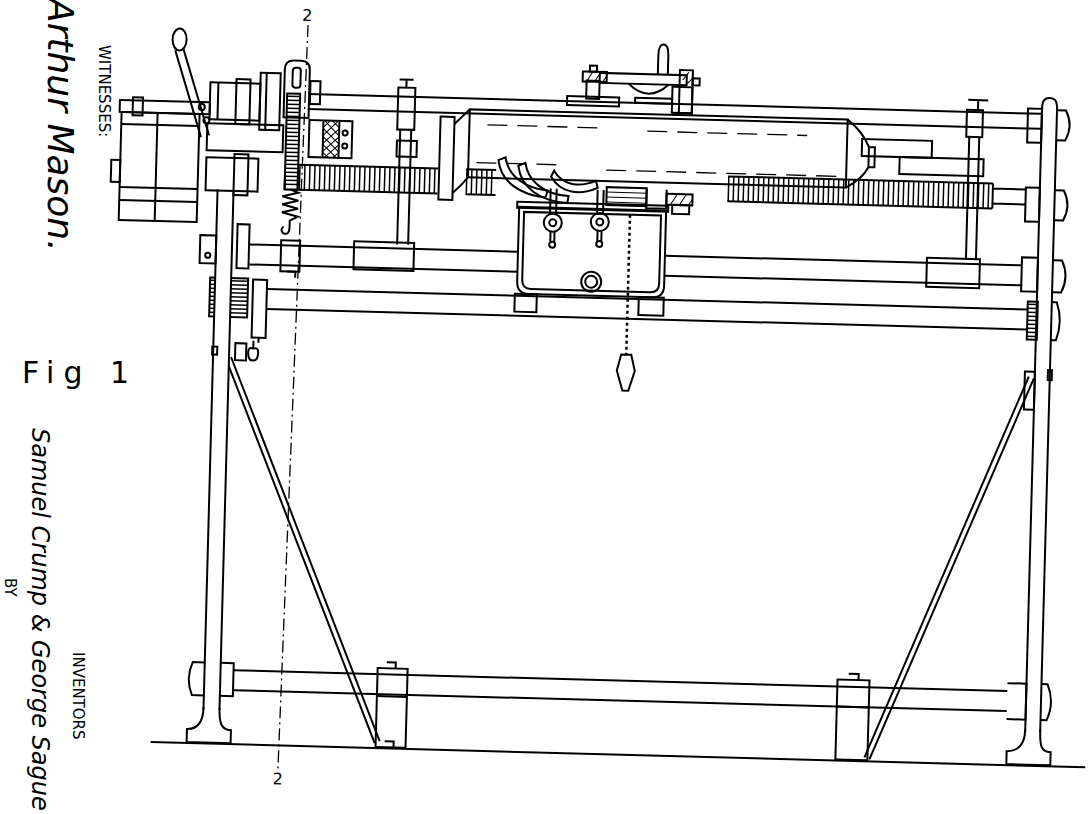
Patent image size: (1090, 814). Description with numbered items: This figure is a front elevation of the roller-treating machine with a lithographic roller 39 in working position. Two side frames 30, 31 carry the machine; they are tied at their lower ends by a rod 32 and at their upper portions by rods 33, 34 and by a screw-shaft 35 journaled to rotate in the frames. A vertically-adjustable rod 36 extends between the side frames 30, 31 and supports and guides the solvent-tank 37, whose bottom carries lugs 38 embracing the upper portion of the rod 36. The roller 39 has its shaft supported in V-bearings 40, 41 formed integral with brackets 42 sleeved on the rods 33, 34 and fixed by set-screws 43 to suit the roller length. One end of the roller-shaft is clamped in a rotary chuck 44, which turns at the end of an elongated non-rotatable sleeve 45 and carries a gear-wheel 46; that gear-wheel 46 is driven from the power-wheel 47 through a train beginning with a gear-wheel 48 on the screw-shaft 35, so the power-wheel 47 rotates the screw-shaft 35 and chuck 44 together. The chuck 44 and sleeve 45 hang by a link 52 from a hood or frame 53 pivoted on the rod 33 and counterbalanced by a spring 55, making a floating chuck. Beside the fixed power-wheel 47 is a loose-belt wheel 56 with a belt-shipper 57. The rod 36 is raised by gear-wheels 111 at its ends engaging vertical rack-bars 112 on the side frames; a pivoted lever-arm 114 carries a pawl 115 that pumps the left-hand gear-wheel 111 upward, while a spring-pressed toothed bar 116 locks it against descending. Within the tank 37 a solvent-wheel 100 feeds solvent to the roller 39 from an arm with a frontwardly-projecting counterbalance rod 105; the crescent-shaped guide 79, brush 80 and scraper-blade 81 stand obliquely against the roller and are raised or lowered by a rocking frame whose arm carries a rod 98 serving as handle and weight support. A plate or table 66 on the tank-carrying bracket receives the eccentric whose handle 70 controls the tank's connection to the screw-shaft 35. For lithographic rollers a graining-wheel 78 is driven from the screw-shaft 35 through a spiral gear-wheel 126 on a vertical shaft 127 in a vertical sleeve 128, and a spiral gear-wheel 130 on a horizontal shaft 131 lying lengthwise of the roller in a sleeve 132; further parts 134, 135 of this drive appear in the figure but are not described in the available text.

The side frame 30 is at (220, 468).
The side frame 31 is at (1040, 523).
The rod 32 is at (619, 681).
The rod 33 is at (907, 108).
The rod 34 is at (329, 266).
The screw-shaft 35 is at (370, 197).
The vertically-adjustable rod 36 is at (808, 313).
The solvent-tank 37 is at (566, 286).
The lugs 38 is at (520, 311).
The roller 39 is at (656, 160).
The V-bearing 40 is at (921, 158).
The V-bearing 41 is at (400, 149).
The brackets 42 is at (405, 218).
The set-screws 43 is at (400, 88).
The rotary chuck 44 is at (325, 128).
The non-rotatable sleeve 45 is at (220, 147).
The gear-wheel 46 is at (276, 189).
The power-wheel 47 is at (185, 233).
The gear-wheel 48 is at (296, 200).
The link 52 is at (258, 82).
The hood or frame 53 is at (278, 72).
The spring 55 is at (295, 235).
The loose-belt wheel 56 is at (116, 203).
The belt-shipper 57 is at (201, 111).
The plate or table 66 is at (631, 93).
The handle 70 is at (658, 57).
The graining-wheel 78 is at (561, 99).
The guide 79 is at (570, 193).
The brush 80 is at (520, 193).
The scraper-blade 81 is at (493, 188).
The rod 98 is at (547, 249).
The solvent-wheel 100 is at (614, 192).
The rod 105 is at (614, 255).
The gear-wheels 111 is at (220, 334).
The rack-bars 112 is at (220, 334).
The lever-arm 114 is at (255, 336).
The pawl 115 is at (233, 278).
The toothed bar 116 is at (246, 371).
The spiral gear-wheel 126 is at (685, 199).
The vertical shaft 127 is at (673, 211).
The vertical sleeve 128 is at (684, 97).
The spiral gear-wheel 130 is at (678, 71).
The horizontal shaft 131 is at (691, 79).
The sleeve 132 is at (628, 74).
The block 134 is at (575, 73).
The screw 135 is at (584, 69).